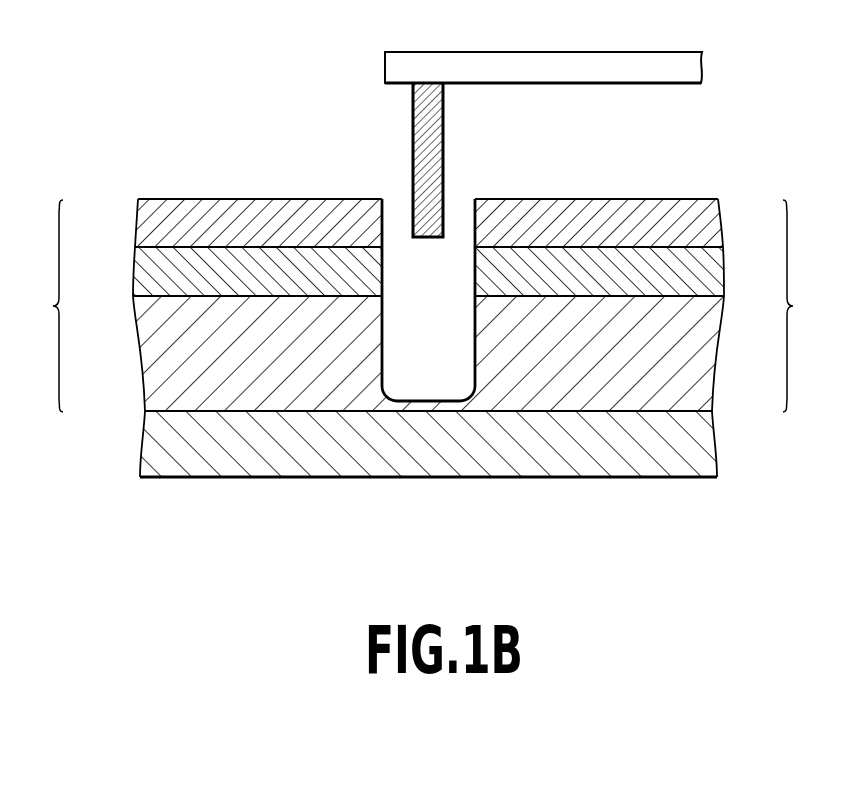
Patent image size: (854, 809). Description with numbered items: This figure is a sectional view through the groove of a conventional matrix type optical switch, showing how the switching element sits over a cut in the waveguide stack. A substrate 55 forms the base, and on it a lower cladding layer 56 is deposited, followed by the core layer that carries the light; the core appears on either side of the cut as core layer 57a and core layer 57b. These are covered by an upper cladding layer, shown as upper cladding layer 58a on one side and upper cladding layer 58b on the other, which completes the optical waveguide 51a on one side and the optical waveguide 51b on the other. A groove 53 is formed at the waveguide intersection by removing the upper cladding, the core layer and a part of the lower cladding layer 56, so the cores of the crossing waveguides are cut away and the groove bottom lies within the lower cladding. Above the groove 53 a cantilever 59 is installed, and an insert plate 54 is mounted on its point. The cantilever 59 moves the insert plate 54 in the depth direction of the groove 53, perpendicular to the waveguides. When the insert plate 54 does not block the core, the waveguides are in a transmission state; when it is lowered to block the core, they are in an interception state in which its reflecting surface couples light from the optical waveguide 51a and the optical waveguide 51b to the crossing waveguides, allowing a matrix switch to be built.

The optical waveguide 51a is at (34, 306).
The optical waveguide 51b is at (814, 306).
The groove 53 is at (453, 226).
The insert plate 54 is at (414, 127).
The substrate 55 is at (706, 449).
The lower cladding layer 56 is at (703, 354).
The core layer 57a is at (137, 270).
The core layer 57b is at (714, 273).
The upper cladding layer 58a is at (137, 222).
The upper cladding layer 58b is at (714, 225).
The cantilever 59 is at (463, 61).